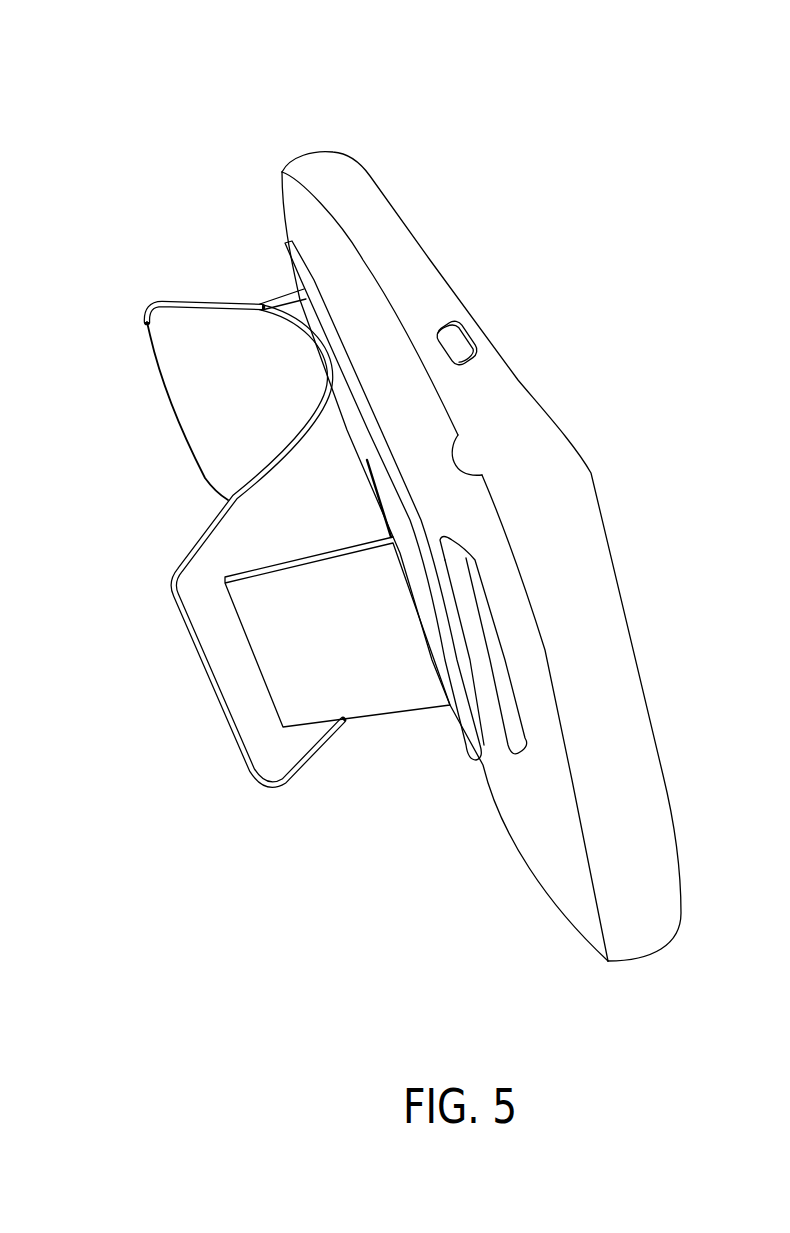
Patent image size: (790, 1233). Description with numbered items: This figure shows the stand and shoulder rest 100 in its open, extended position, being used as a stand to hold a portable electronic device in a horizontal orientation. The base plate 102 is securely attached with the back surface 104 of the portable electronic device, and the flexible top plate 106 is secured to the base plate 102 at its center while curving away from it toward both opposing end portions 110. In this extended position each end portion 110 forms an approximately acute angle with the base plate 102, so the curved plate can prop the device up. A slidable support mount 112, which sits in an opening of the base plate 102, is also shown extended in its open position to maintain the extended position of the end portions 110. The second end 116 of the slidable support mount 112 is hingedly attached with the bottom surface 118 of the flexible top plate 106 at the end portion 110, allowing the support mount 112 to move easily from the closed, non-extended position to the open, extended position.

The stand and shoulder rest 100 is at (373, 481).
The base plate 102 is at (300, 290).
The back surface 104 is at (288, 185).
The flexible top plate 106 is at (298, 416).
The end portions 110 is at (173, 367).
The slidable support mount 112 is at (358, 693).
The second end 116 is at (263, 690).
The bottom surface 118 is at (218, 652).